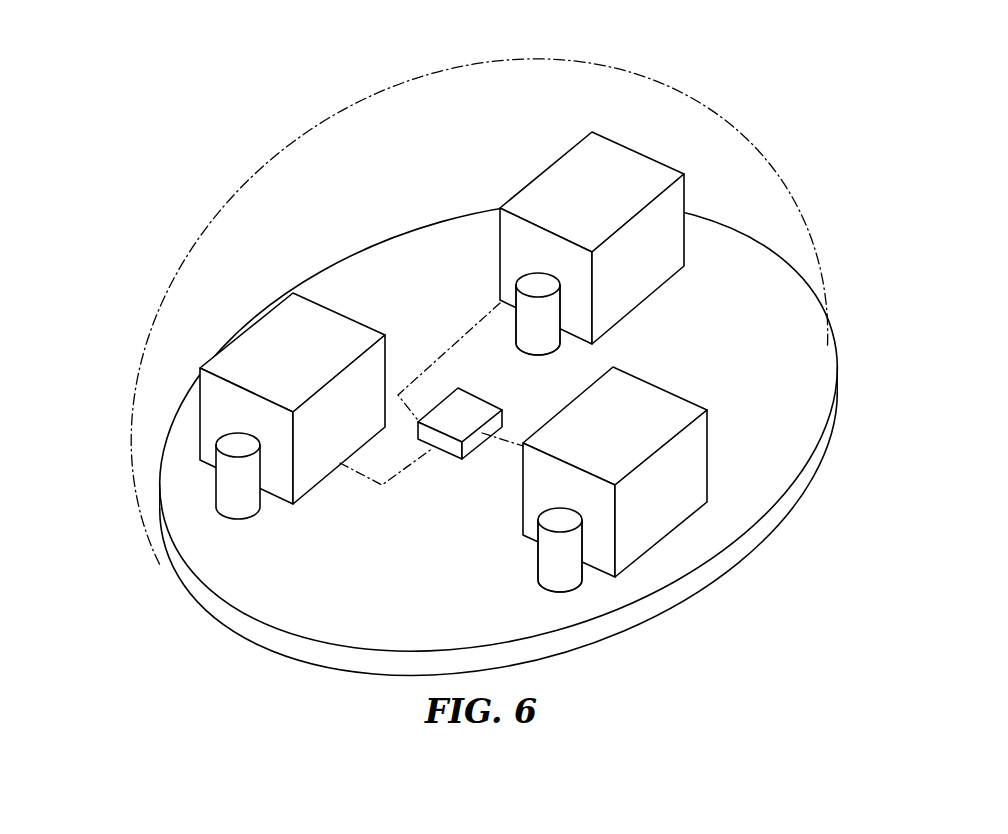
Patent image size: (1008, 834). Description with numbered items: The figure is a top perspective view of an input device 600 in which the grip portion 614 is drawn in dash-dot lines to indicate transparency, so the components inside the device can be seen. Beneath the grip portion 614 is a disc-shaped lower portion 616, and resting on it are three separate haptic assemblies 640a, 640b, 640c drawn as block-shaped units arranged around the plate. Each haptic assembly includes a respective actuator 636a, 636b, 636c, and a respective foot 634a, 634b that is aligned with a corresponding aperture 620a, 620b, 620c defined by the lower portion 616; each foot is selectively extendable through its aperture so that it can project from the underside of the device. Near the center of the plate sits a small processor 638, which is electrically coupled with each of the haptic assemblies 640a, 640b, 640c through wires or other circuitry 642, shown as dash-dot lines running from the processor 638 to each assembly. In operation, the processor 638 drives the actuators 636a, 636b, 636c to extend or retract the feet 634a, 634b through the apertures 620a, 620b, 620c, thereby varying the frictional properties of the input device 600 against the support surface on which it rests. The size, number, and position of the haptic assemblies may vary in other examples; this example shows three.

The input device 600 is at (467, 378).
The grip portion 614 is at (657, 77).
The lower portion 616 is at (756, 540).
The aperture 620a is at (152, 478).
The aperture 620b is at (552, 350).
The aperture 620c is at (543, 586).
The foot 634a is at (222, 488).
The foot 634b is at (527, 318).
The actuator 636a is at (210, 401).
The actuator 636b is at (540, 182).
The actuator 636c is at (655, 525).
The processor 638 is at (447, 443).
The haptic assembly 640a is at (222, 368).
The haptic assembly 640b is at (558, 225).
The haptic assembly 640c is at (665, 507).
The circuitry 642 is at (362, 475).